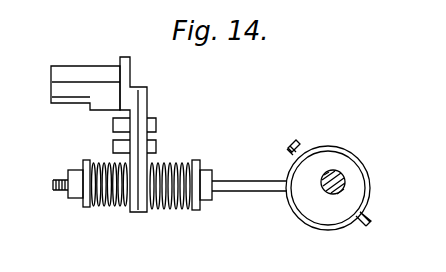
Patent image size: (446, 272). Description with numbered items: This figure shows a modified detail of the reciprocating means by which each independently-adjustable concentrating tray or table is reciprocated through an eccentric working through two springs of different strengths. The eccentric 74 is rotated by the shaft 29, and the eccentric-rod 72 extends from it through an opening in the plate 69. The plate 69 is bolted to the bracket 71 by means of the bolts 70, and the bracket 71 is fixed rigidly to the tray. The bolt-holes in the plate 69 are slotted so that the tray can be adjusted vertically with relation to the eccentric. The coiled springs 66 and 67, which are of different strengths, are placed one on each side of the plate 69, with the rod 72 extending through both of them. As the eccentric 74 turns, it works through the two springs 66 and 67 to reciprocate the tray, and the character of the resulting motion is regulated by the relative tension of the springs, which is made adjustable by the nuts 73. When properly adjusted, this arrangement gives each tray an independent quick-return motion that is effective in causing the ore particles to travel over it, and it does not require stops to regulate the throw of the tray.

The shaft 29 is at (343, 172).
The coiled spring 66 is at (105, 193).
The coiled spring 67 is at (175, 193).
The plate 69 is at (147, 112).
The bolts 70 is at (166, 125).
The bracket 71 is at (97, 105).
The eccentric-rod 72 is at (255, 186).
The nuts 73 is at (71, 193).
The eccentric 74 is at (311, 218).